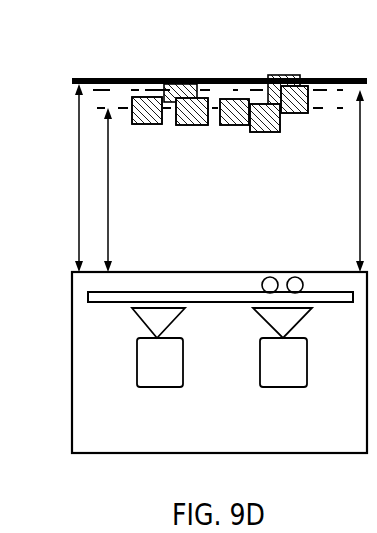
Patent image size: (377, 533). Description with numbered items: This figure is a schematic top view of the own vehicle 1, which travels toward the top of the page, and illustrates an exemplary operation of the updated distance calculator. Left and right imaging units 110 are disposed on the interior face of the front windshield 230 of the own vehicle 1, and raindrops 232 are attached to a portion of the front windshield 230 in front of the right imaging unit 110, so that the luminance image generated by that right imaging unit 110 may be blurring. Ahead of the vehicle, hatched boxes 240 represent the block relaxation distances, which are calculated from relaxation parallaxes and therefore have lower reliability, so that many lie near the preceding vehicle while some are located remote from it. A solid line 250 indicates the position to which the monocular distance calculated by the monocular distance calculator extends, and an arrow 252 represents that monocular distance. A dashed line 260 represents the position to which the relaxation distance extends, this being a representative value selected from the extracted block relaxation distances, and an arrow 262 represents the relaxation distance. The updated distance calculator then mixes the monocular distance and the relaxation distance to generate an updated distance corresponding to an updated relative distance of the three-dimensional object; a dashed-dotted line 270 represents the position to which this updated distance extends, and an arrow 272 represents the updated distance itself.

The own vehicle 1 is at (72, 365).
The imaging unit 110 is at (157, 388).
The front windshield 230 is at (72, 298).
The raindrops 232 is at (312, 272).
The hatched boxes 240 is at (262, 133).
The solid line 250 is at (93, 77).
The arrow 252 is at (79, 178).
The dashed line 260 is at (125, 86).
The arrow 262 is at (111, 172).
The dashed-dotted line 270 is at (342, 76).
The arrow 272 is at (360, 165).